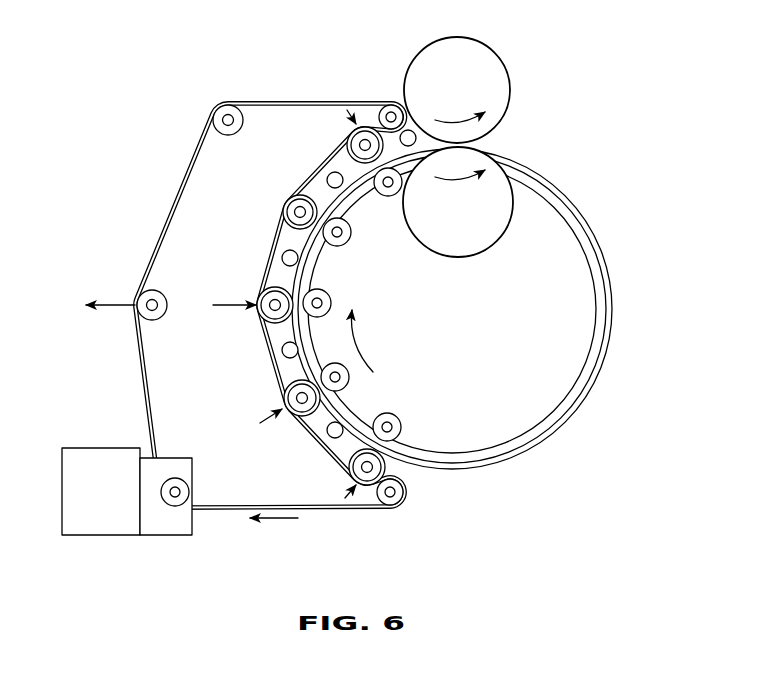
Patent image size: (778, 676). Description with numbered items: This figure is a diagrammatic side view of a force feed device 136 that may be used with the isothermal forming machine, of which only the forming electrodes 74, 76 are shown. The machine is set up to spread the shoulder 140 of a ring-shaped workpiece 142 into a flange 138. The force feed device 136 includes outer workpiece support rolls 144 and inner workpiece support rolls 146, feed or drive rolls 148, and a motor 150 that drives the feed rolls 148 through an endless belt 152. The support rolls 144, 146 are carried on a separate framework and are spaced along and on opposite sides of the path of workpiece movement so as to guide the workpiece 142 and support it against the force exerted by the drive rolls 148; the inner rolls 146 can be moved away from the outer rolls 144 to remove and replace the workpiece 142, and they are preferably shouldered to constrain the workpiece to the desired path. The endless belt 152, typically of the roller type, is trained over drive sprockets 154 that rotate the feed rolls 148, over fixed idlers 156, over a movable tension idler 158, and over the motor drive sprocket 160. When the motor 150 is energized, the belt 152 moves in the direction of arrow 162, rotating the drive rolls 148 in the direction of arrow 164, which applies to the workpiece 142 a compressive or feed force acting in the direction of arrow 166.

The force feed device 136 is at (148, 120).
The flange 138 is at (608, 355).
The shoulder 140 is at (446, 473).
The ring-shaped workpiece 142 is at (555, 405).
The outer workpiece support rolls 144 is at (281, 256).
The inner workpiece support rolls 146 is at (352, 236).
The feed rolls 148 is at (349, 138).
The motor 150 is at (86, 501).
The endless belt 152 is at (178, 203).
The drive sprockets 154 is at (268, 316).
The fixed idlers 156 is at (236, 131).
The movable tension idler 158 is at (140, 294).
The motor drive sprocket 160 is at (190, 492).
The arrow 162 is at (283, 522).
The arrow 164 is at (288, 214).
The arrow 166 is at (360, 336).
The roller 74 is at (511, 93).
The roller 76 is at (503, 233).